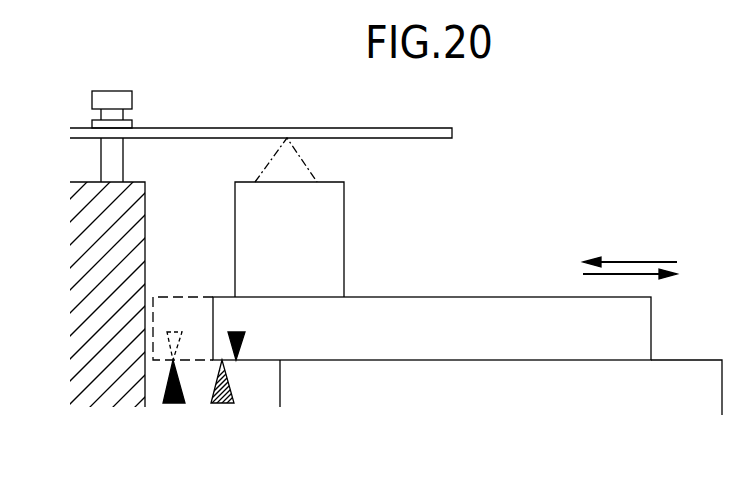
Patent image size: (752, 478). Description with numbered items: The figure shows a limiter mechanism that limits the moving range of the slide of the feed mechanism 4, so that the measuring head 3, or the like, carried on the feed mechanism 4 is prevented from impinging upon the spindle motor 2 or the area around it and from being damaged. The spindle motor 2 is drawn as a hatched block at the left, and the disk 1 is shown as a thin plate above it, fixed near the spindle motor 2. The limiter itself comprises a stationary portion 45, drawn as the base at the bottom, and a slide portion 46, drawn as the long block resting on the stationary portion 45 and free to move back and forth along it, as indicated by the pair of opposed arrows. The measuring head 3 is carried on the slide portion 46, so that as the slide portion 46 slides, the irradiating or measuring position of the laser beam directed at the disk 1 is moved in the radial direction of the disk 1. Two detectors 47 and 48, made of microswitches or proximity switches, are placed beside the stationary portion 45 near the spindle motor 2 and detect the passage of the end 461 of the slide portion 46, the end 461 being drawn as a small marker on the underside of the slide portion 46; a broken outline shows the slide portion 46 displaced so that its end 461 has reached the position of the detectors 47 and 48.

The disk 1 is at (329, 128).
The spindle motor 2 is at (90, 289).
The measuring head 3 is at (344, 240).
The feed mechanism 4 is at (667, 340).
The stationary portion 45 is at (563, 388).
The slide portion 46 is at (492, 297).
The end of slide portion 461 is at (238, 361).
The detector 47 is at (224, 407).
The detector 48 is at (175, 407).